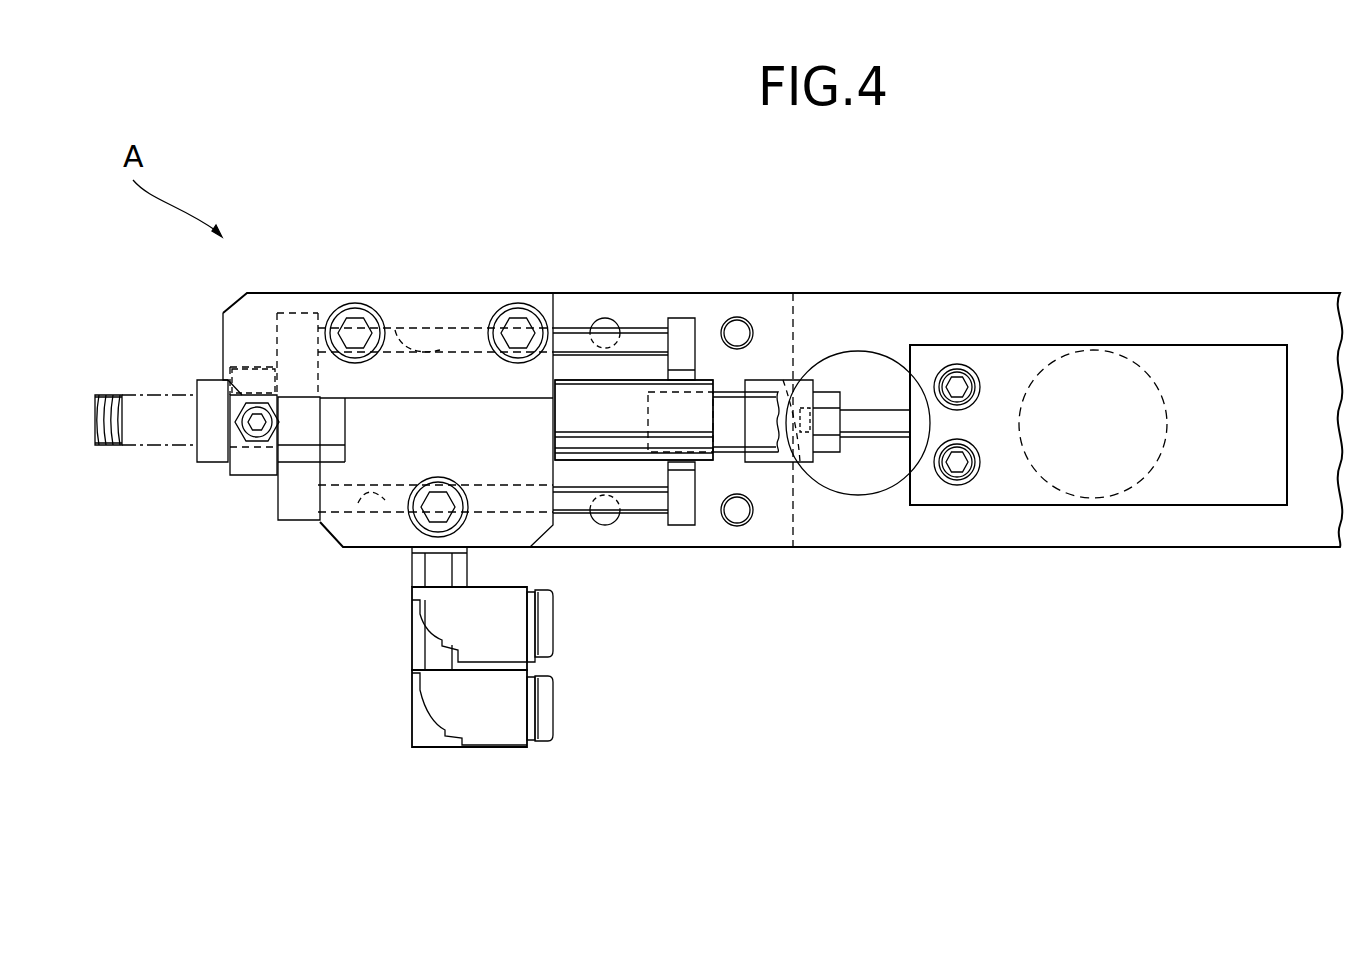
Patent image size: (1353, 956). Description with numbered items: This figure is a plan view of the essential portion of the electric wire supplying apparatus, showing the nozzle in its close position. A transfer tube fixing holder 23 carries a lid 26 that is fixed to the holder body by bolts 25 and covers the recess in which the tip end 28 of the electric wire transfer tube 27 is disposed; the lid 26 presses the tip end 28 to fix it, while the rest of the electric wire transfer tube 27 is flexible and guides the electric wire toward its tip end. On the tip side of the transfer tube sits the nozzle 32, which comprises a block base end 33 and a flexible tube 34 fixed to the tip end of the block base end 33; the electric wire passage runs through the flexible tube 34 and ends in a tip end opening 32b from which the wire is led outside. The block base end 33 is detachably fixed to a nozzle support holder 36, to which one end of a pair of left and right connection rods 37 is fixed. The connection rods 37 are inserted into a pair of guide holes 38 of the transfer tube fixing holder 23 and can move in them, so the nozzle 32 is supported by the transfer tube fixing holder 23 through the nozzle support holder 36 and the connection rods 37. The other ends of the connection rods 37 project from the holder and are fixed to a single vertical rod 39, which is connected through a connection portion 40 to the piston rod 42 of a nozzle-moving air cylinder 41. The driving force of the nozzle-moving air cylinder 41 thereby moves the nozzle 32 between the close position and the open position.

The transfer tube fixing holder 23 is at (477, 290).
The bolts 25 is at (355, 305).
The lid 26 is at (412, 318).
The electric wire transfer tube 27 is at (730, 387).
The tip end of electric wire transfer tube 28 is at (578, 390).
The nozzle 32 is at (176, 386).
The tip end opening 32b is at (92, 408).
The block base end 33 is at (250, 458).
The flexible tube 34 is at (103, 435).
The nozzle support holder 36 is at (298, 505).
The connection rods 37 is at (648, 340).
The guide holes 38 is at (453, 312).
The vertical rod 39 is at (680, 513).
The connection portion 40 is at (782, 390).
The nozzle-moving air cylinder 41 is at (1182, 375).
The piston rod 42 is at (873, 418).